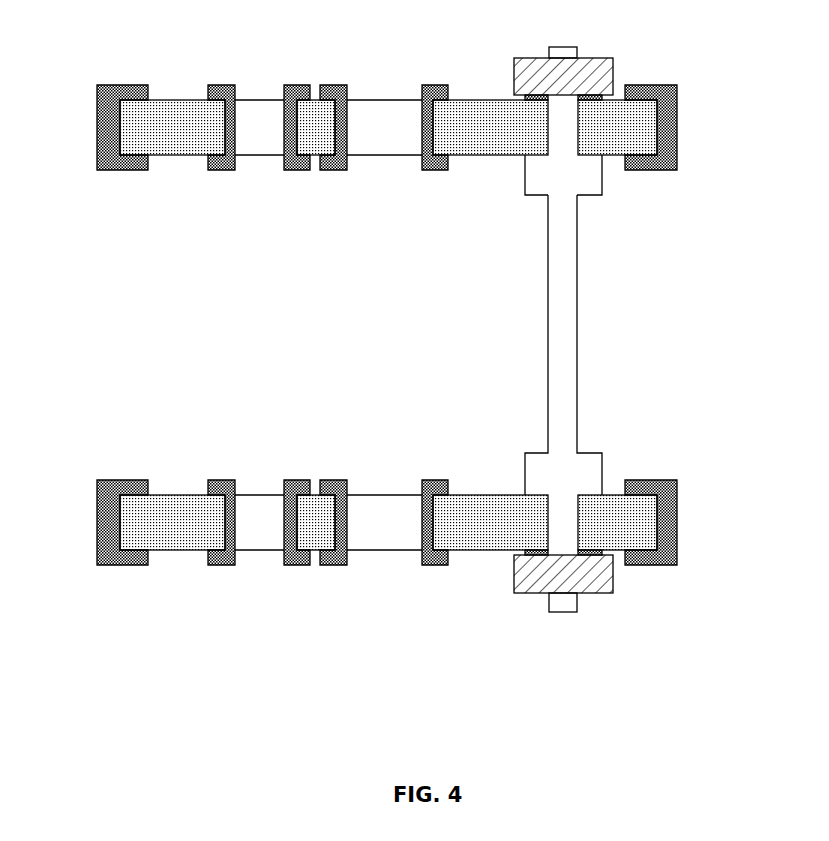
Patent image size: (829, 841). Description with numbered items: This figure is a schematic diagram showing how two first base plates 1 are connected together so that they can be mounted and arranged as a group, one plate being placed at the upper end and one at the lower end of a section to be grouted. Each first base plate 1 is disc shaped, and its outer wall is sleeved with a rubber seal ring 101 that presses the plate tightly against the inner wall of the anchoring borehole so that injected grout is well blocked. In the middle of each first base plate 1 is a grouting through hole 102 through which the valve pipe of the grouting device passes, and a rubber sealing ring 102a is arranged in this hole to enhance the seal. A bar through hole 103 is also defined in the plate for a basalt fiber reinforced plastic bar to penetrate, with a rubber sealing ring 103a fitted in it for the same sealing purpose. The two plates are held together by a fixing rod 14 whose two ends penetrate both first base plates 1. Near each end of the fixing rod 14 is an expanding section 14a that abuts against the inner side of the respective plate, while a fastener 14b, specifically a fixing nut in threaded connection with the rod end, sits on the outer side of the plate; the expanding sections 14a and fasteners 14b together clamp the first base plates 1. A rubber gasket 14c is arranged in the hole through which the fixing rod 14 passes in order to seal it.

The first base plate 1 is at (188, 123).
The rubber seal ring 101 is at (112, 125).
The grouting through hole 102 is at (385, 108).
The rubber sealing ring 102a is at (333, 153).
The bar through hole 103 is at (268, 113).
The rubber sealing ring 103a is at (224, 153).
The fixing rod 14 is at (560, 398).
The expanding section 14a is at (555, 177).
The fastener 14b is at (580, 72).
The rubber gasket 14c is at (578, 548).